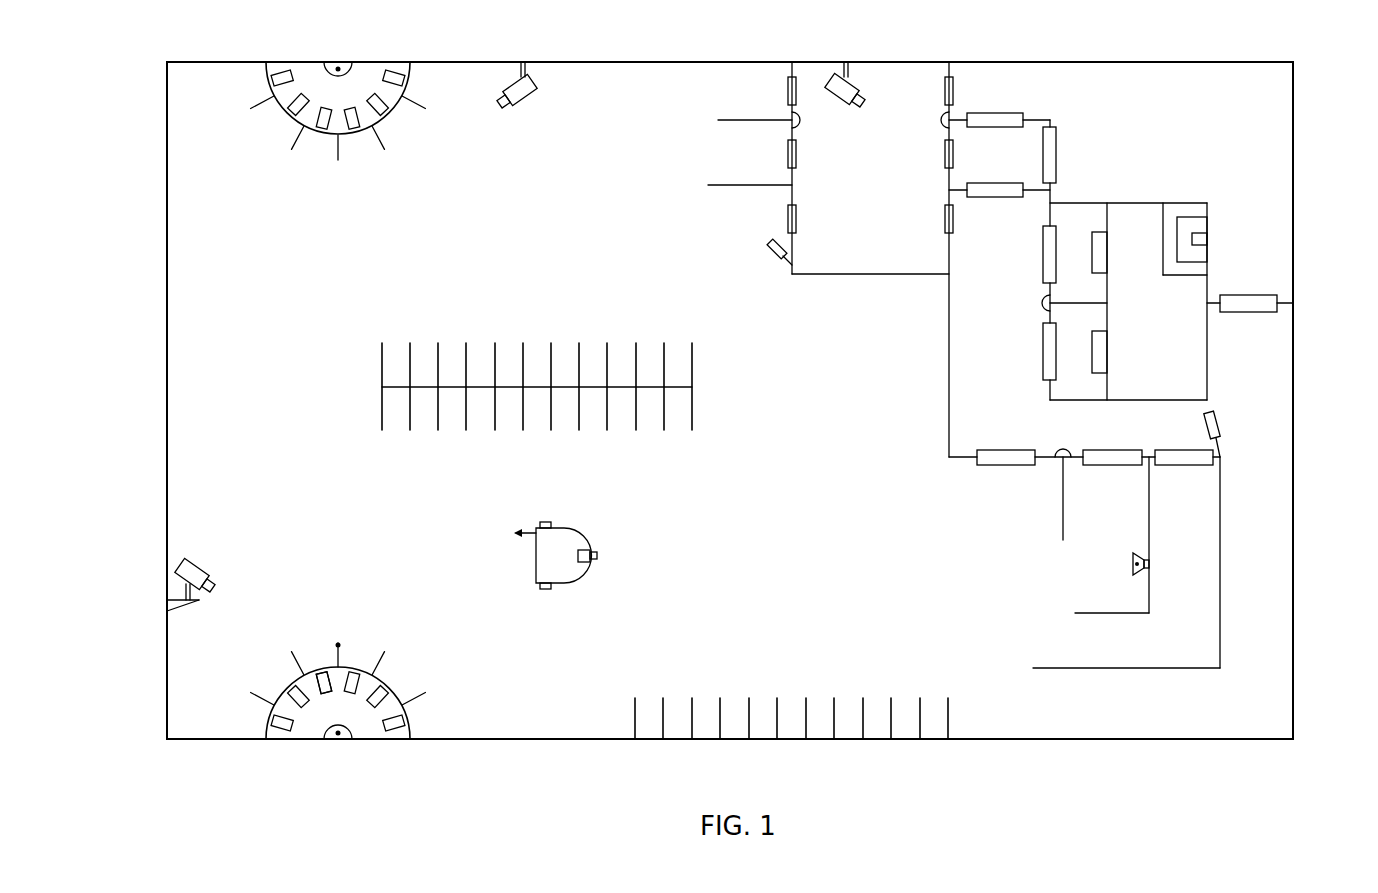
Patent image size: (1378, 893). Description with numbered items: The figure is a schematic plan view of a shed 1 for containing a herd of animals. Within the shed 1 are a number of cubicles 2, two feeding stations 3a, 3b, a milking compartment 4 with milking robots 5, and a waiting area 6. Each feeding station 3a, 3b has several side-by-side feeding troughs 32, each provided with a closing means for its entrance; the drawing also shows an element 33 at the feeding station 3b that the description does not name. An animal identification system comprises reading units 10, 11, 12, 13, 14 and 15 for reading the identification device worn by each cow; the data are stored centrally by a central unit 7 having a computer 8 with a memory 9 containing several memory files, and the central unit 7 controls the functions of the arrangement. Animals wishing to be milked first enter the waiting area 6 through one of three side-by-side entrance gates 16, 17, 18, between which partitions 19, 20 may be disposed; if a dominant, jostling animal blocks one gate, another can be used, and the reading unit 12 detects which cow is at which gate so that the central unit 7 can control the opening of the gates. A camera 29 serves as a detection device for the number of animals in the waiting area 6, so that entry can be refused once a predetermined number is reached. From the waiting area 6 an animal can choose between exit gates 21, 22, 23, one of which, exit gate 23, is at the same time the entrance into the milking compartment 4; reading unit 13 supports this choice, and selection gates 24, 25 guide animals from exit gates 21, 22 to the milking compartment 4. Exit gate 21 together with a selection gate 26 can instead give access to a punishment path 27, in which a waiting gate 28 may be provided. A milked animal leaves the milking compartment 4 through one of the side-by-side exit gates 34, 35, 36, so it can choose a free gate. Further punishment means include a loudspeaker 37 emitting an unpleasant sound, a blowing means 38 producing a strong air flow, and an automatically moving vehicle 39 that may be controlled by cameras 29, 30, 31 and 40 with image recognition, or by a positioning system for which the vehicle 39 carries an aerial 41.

The shed 1 is at (165, 172).
The cubicles 2 is at (537, 366).
The feeding station 3a is at (303, 72).
The feeding station 3b is at (368, 722).
The milking compartment 4 is at (965, 386).
The milking robot 5 is at (1098, 253).
The waiting area 6 is at (848, 256).
The central unit 7 is at (1170, 207).
The computer 8 is at (1195, 225).
The memory 9 is at (1198, 238).
The reading unit 10 is at (340, 68).
The reading unit 11 is at (338, 735).
The reading unit 12 is at (856, 136).
The reading unit 13 is at (949, 120).
The reading unit 14 is at (1043, 303).
The reading unit 15 is at (1124, 438).
The entrance gate 16 is at (792, 90).
The entrance gate 17 is at (792, 153).
The entrance gate 18 is at (792, 220).
The partition 19 is at (718, 120).
The partition 20 is at (708, 185).
The exit gate 21 is at (949, 90).
The exit gate 22 is at (949, 153).
The exit gate 23 is at (949, 220).
The selection gate 24 is at (990, 120).
The selection gate 25 is at (1025, 162).
The selection gate 26 is at (1050, 153).
The punishment path 27 is at (1254, 391).
The waiting gate 28 is at (1240, 303).
The camera 29 is at (838, 86).
The camera 30 is at (523, 87).
The camera 31 is at (188, 571).
The feeding trough 32 is at (322, 675).
The antenna 33 is at (338, 645).
The exit gate 34 is at (1005, 459).
The exit gate 35 is at (1113, 459).
The exit gate 36 is at (1185, 459).
The loudspeaker 37 is at (1132, 564).
The blowing means 38 is at (775, 250).
The vehicle 39 is at (560, 566).
The camera 40 is at (583, 555).
The aerial 41 is at (519, 531).